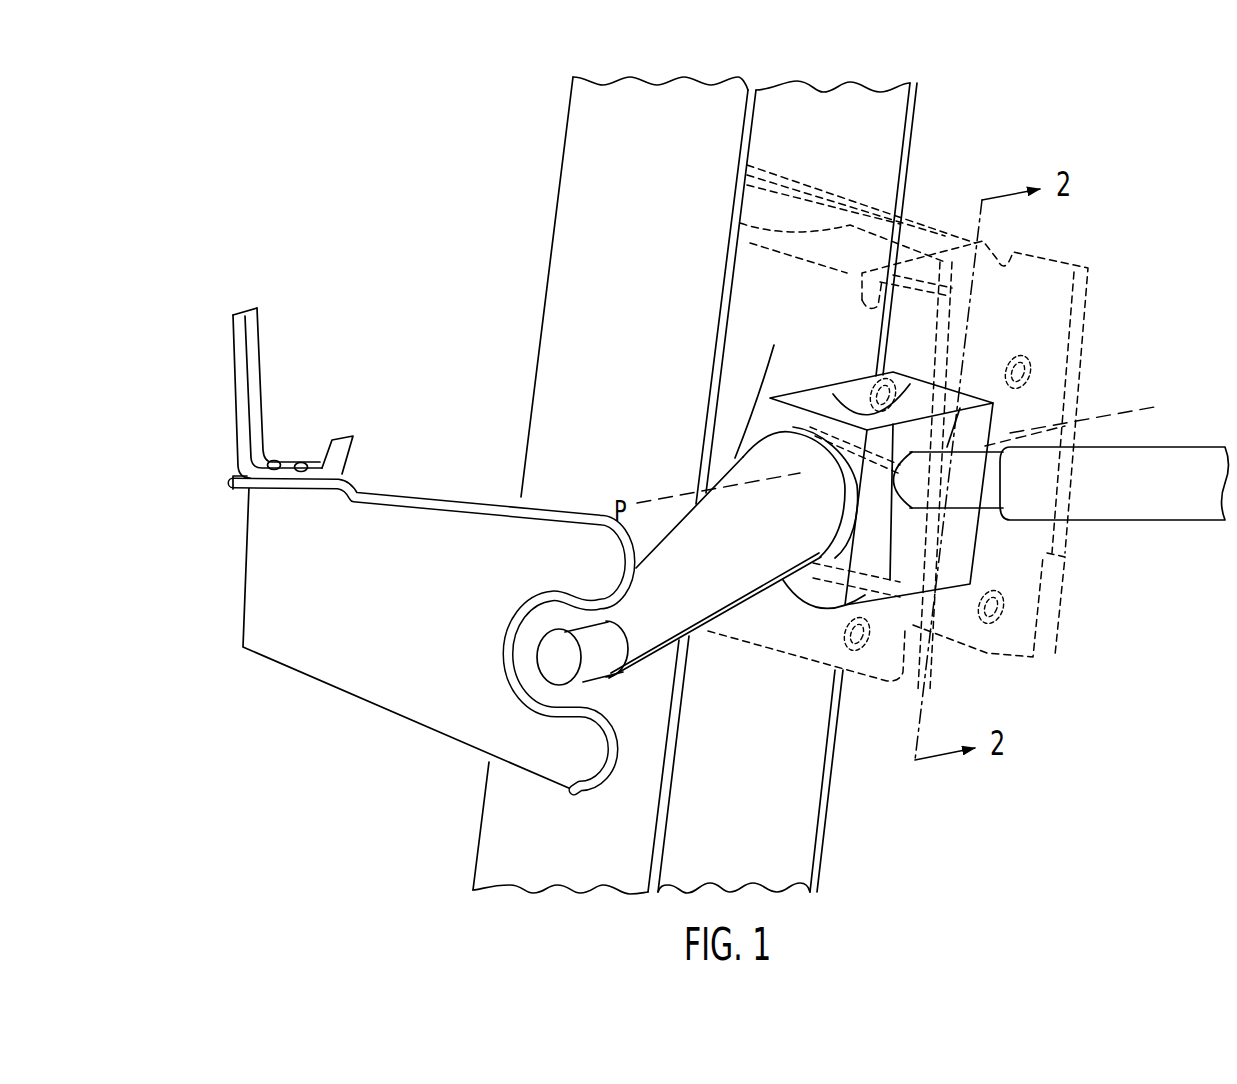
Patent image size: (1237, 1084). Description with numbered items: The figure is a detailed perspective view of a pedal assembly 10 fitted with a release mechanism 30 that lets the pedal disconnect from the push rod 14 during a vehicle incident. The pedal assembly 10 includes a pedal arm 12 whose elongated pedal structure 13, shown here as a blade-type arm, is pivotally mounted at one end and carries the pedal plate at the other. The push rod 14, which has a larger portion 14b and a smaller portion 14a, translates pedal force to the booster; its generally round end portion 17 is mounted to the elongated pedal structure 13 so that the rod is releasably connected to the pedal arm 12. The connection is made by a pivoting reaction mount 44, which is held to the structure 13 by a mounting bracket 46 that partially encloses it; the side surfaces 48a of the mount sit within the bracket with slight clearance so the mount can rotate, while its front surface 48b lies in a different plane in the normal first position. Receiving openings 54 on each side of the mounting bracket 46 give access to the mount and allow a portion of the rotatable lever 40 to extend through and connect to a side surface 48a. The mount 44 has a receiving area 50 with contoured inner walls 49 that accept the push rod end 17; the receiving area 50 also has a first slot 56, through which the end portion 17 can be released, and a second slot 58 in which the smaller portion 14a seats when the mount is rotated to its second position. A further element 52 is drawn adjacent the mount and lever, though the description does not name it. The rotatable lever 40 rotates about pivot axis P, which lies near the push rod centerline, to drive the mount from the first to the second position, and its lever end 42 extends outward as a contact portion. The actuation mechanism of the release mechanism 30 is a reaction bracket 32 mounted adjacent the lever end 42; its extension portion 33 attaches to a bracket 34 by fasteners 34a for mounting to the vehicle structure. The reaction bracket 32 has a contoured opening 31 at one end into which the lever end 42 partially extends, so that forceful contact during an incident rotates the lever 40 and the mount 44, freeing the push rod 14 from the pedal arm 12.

The pedal assembly 10 is at (415, 216).
The pedal arm 12 is at (548, 236).
The elongated pedal structure 13 is at (572, 334).
The push rod 14 is at (1061, 474).
The smaller portion of push rod 14a is at (1000, 477).
The larger portion of push rod 14b is at (1190, 503).
The end portion of push rod 17 is at (890, 523).
The release mechanism 30 is at (398, 565).
The contoured opening 31 is at (497, 652).
The reaction bracket 32 is at (400, 517).
The extension portion 33 is at (231, 484).
The bracket 34 is at (293, 393).
The fasteners 34a is at (276, 460).
The rotatable lever 40 is at (749, 565).
The lever end 42 is at (595, 672).
The pivoting reaction mount 44 is at (768, 378).
The mounting bracket 46 is at (1058, 297).
The side surfaces 48a is at (973, 388).
The front surface 48b is at (962, 553).
The inner walls 49 is at (908, 567).
The receiving area 50 is at (904, 378).
The spring 52 is at (742, 428).
The receiving openings 54 is at (873, 513).
The first slot 56 is at (853, 382).
The second slot 58 is at (903, 593).